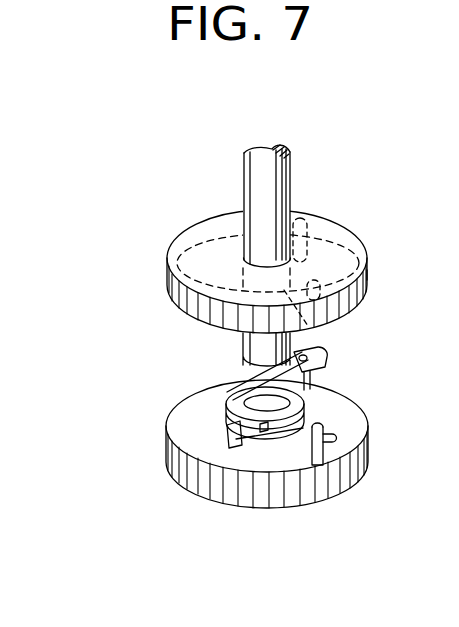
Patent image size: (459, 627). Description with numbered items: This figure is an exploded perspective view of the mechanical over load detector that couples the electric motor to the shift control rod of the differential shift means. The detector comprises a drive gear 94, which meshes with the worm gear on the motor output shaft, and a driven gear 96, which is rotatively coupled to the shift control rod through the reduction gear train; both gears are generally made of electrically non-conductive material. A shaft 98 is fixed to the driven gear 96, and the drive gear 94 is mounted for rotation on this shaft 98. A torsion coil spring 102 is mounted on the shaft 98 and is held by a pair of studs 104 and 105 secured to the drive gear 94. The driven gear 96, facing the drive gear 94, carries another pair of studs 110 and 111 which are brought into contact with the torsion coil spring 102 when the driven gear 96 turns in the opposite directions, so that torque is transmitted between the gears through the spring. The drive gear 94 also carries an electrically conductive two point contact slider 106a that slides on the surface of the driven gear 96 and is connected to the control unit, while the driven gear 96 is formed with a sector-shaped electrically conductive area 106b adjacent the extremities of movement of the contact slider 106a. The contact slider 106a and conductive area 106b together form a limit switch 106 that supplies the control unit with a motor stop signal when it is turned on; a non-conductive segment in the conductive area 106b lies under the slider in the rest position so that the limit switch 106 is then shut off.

The drive gear 94 is at (322, 490).
The driven gear 96 is at (326, 220).
The shaft 98 is at (282, 183).
The torsion coil spring 102 is at (241, 385).
The stud 104 is at (314, 387).
The stud 105 is at (321, 425).
The limit switch 106 is at (100, 293).
The contact slider 106a is at (228, 422).
The conductive area 106b is at (193, 323).
The stud 110 is at (377, 281).
The stud 111 is at (333, 243).